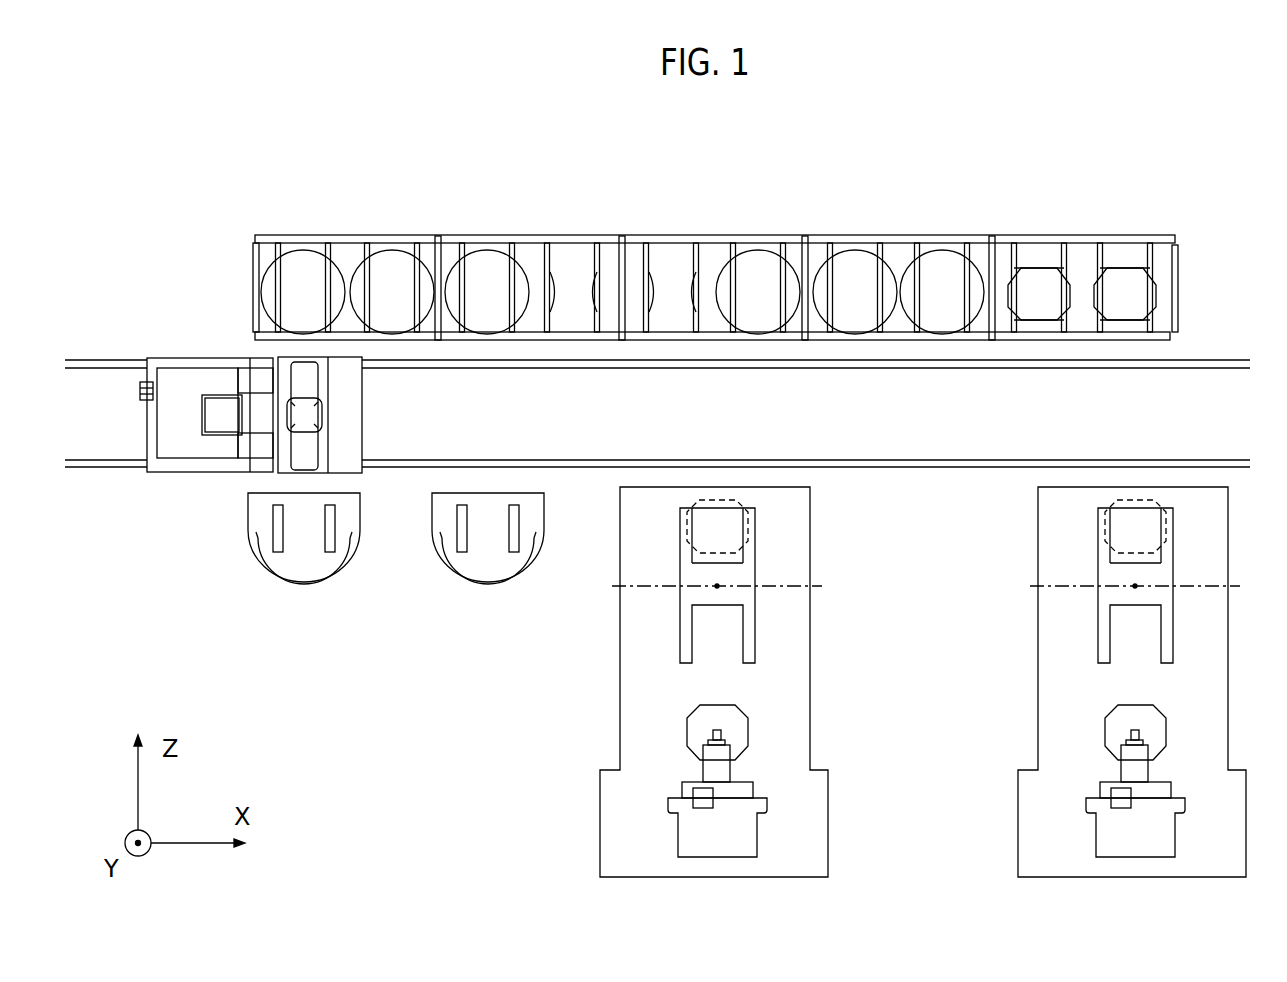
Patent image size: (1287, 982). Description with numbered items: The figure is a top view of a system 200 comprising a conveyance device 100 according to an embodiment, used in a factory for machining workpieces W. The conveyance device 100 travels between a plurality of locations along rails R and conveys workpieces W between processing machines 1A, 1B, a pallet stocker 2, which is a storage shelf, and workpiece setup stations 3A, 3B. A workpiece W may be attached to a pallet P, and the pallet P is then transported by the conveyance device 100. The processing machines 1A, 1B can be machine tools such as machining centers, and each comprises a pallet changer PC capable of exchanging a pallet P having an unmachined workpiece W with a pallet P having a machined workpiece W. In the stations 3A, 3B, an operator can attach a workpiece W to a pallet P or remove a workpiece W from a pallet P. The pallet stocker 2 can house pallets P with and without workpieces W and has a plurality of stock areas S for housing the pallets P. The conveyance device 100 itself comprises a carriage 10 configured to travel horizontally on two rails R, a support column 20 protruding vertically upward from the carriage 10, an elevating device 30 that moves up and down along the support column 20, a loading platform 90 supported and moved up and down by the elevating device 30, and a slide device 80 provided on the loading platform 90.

The system 200 is at (122, 203).
The pallet stocker 2 is at (1160, 208).
The workpiece W is at (484, 268).
The pallet P is at (1124, 282).
The rails R is at (705, 368).
The stock area S is at (1086, 416).
The conveyance device 100 is at (259, 399).
The carriage 10 is at (182, 466).
The support column 20 is at (215, 415).
The elevating device 30 is at (183, 428).
The slide device 80 is at (340, 416).
The loading platform 90 is at (343, 389).
The workpiece setup station 3A is at (305, 598).
The workpiece setup station 3B is at (490, 598).
The processing machine 1A is at (576, 794).
The processing machine 1B is at (995, 794).
The pallet changer PC is at (1076, 560).